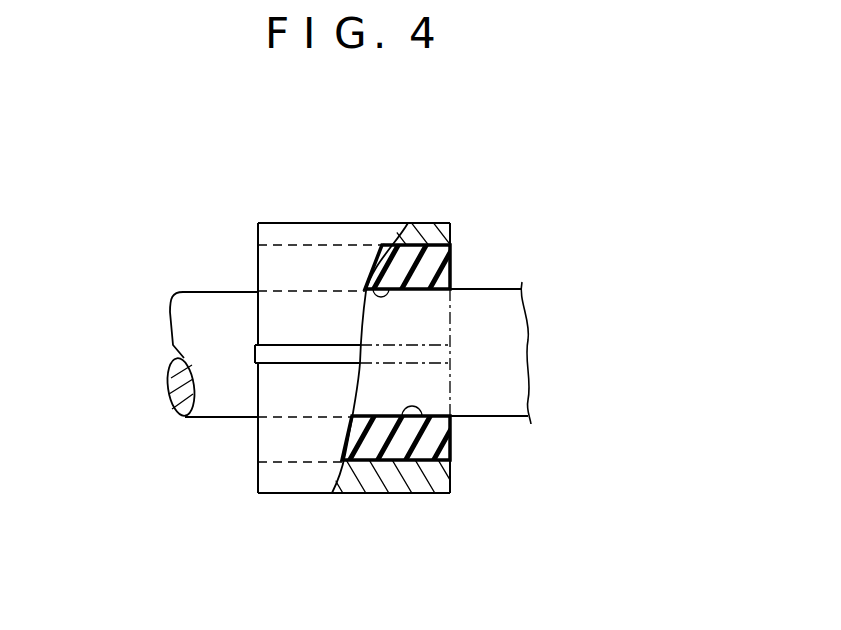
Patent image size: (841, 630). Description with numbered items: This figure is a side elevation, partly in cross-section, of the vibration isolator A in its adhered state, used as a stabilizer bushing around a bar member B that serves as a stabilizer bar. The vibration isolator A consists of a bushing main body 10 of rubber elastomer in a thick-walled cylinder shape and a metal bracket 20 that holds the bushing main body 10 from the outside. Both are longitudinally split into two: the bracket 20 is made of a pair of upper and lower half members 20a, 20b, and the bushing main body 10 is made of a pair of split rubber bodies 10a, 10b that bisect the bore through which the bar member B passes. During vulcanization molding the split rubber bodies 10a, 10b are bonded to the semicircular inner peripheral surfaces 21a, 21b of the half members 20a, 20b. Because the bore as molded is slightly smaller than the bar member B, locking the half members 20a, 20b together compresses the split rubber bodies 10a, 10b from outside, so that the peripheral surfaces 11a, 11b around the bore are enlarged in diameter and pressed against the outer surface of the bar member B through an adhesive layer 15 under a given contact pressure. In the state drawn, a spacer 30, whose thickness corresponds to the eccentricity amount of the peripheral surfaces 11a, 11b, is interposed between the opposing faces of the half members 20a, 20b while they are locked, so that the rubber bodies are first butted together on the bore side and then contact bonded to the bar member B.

The bushing main body 10 is at (602, 200).
The split rubber body 10a is at (445, 263).
The split rubber body 10b is at (442, 437).
The peripheral surface around the bore 11a is at (408, 223).
The peripheral surface around the bore 11b is at (428, 468).
The adhesive layer 15 is at (450, 291).
The bracket 20 is at (108, 225).
The half member 20a is at (273, 272).
The half member 20b is at (278, 447).
The semicircular inner peripheral surface 21a is at (437, 246).
The semicircular inner peripheral surface 21b is at (447, 452).
The spacer 30 is at (302, 356).
The vibration isolator A is at (276, 220).
The bar member B is at (507, 417).